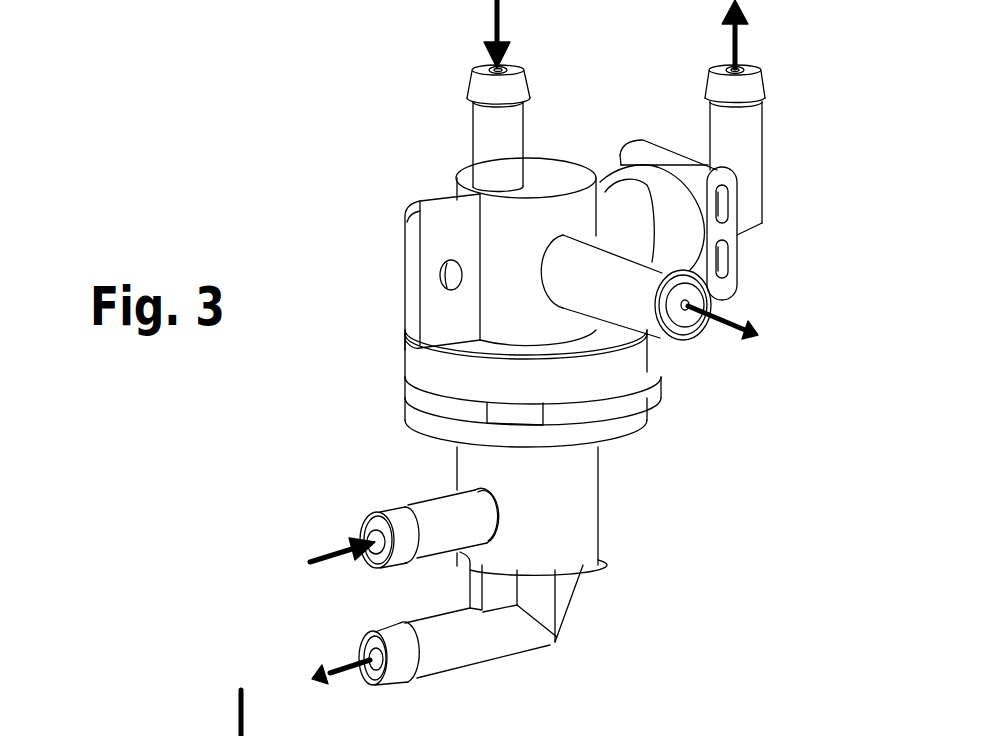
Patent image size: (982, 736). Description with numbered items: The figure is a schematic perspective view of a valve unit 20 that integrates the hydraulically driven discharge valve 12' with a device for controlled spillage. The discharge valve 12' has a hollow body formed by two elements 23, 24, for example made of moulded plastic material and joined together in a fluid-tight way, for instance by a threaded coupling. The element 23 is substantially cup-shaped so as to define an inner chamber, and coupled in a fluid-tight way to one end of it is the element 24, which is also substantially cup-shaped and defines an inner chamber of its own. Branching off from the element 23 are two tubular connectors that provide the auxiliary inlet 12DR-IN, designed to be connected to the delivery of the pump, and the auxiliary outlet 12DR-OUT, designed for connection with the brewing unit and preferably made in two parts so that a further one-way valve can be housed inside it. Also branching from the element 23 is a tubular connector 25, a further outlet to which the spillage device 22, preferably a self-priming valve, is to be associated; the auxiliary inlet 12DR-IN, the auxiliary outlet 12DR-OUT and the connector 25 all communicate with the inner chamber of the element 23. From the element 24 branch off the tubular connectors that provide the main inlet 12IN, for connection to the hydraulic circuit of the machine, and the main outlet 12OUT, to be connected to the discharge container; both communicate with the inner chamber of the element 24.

The valve unit 20 is at (353, 112).
The discharge valve 12' is at (361, 247).
The auxiliary inlet 12DR-IN is at (477, 122).
The auxiliary outlet 12DR-OUT is at (750, 142).
The element 23 is at (560, 158).
The tubular connector 25 is at (572, 283).
The device for controlled spillage 22 is at (673, 322).
The element 24 is at (602, 487).
The main inlet 12IN is at (418, 510).
The main outlet 12OUT is at (453, 657).